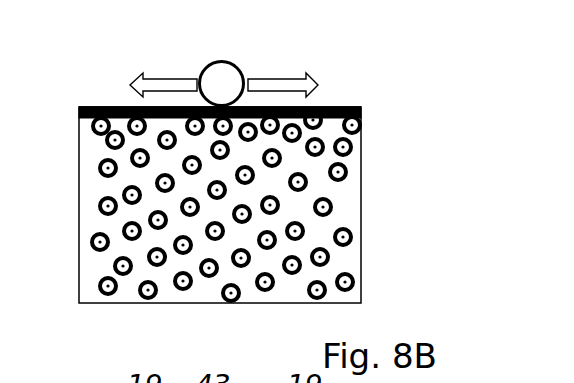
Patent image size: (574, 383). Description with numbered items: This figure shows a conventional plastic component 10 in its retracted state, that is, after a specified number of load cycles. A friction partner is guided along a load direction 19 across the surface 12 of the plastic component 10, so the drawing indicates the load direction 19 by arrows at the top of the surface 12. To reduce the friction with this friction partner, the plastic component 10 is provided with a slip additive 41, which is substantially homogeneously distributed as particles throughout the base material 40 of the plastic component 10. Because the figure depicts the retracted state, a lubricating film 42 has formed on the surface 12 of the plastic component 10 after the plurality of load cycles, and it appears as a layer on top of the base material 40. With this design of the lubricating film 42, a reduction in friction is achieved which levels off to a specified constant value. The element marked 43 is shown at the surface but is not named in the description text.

The plastic component 10 is at (217, 180).
The surface 12 is at (116, 98).
The load direction 19 is at (159, 78).
The base material 40 is at (208, 205).
The slip additive 41 is at (120, 230).
The lubricating film 42 is at (338, 107).
The object / ball 43 is at (217, 78).